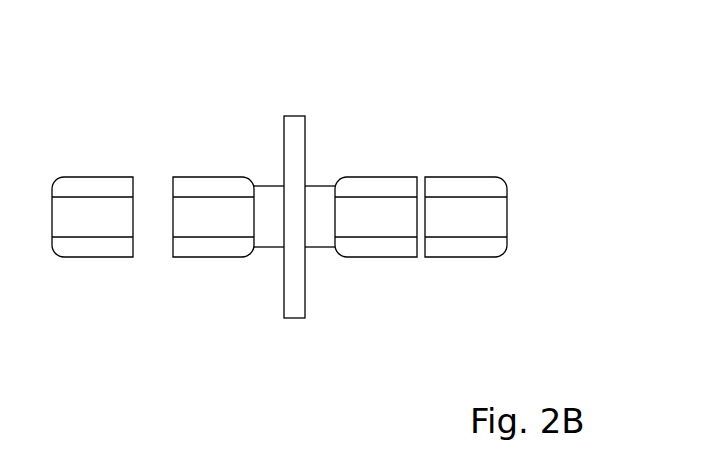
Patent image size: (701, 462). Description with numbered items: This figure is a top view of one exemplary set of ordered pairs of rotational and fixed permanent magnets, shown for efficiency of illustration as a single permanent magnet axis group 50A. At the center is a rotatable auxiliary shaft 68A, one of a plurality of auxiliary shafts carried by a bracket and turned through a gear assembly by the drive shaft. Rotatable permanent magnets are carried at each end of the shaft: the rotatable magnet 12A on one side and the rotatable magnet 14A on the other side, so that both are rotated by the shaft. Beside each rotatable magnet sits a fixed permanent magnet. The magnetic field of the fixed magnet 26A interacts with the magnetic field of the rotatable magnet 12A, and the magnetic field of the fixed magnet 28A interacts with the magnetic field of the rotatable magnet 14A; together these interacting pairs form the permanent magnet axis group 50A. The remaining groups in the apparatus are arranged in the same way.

The permanent magnet axis group 50A is at (244, 120).
The rotatable magnet 12A is at (173, 189).
The fixed magnet 26A is at (138, 252).
The auxiliary shaft 68A is at (325, 185).
The rotatable magnet 14A is at (417, 187).
The fixed magnet 28A is at (426, 252).